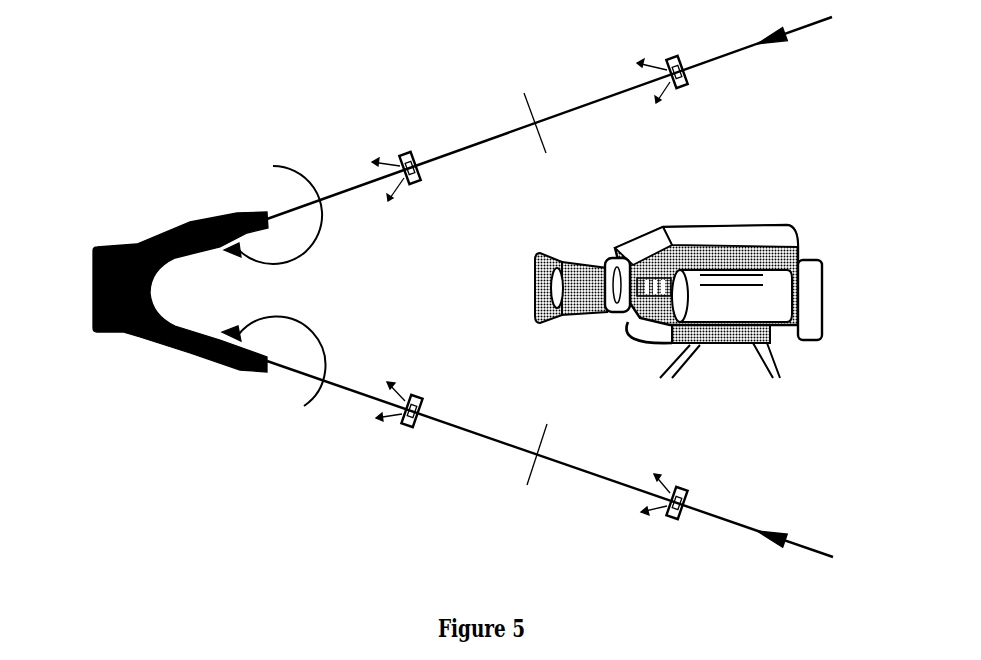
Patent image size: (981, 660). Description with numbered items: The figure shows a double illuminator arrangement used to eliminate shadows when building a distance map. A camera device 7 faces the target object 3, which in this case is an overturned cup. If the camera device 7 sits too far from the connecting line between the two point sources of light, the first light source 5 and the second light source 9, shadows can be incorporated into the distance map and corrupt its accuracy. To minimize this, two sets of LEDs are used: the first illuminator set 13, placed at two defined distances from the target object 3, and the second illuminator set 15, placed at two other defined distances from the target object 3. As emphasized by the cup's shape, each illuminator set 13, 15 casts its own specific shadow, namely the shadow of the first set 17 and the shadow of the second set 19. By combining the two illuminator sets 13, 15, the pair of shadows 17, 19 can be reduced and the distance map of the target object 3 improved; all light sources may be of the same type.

The target object 3 is at (93, 270).
The first light source 5 is at (433, 180).
The camera device 7 is at (828, 283).
The second light source 9 is at (700, 88).
The illuminator set 1 13 is at (549, 109).
The illuminator set 2 15 is at (633, 517).
The shadow of set 1 17 is at (273, 199).
The shadow of set 2 19 is at (273, 377).